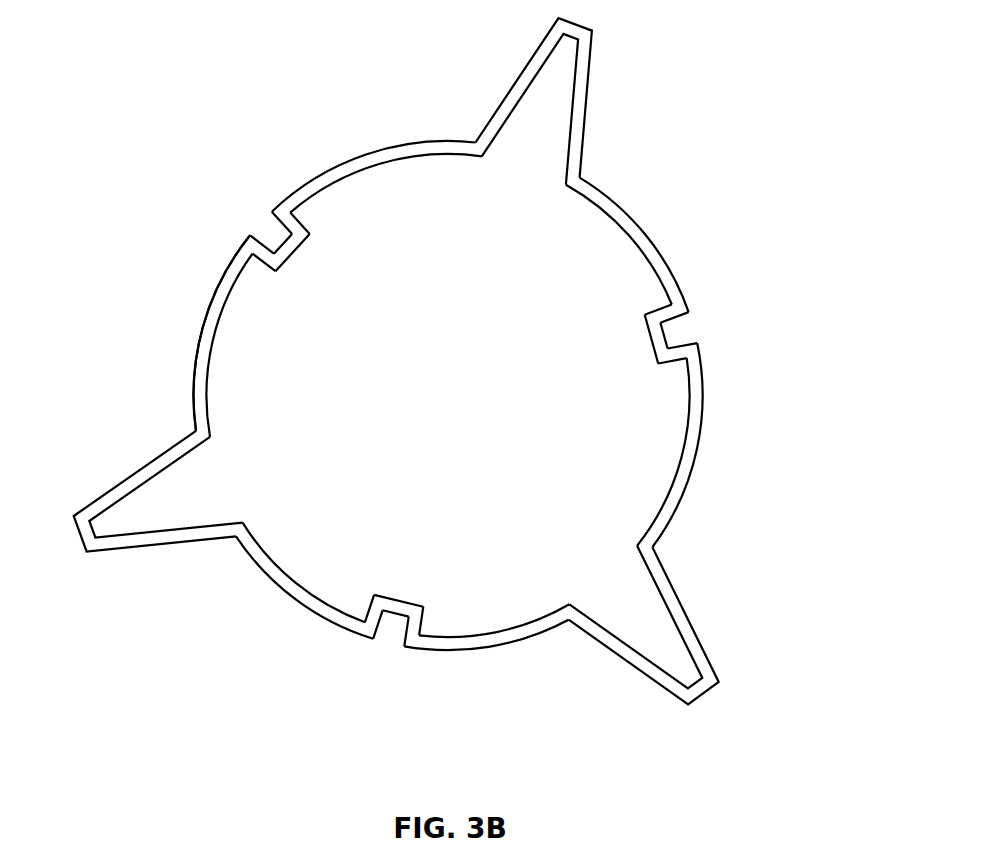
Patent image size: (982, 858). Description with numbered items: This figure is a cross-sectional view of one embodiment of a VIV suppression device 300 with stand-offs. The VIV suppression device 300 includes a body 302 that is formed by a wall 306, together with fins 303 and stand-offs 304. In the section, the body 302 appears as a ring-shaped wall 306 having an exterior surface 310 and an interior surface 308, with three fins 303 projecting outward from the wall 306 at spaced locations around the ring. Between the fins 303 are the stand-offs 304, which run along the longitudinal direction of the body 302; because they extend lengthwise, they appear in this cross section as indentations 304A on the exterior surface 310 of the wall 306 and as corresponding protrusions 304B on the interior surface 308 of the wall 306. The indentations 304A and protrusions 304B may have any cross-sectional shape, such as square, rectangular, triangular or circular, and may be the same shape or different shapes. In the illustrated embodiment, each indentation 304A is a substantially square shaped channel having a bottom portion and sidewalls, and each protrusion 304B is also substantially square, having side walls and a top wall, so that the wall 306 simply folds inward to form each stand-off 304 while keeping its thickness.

The VIV suppression device 300 is at (668, 184).
The body 302 is at (327, 167).
The fins 303 is at (510, 87).
The stand-offs 304 is at (247, 223).
The indentations 304A is at (278, 238).
The protrusions 304B is at (290, 253).
The wall 306 is at (213, 305).
The interior surface 308 is at (212, 393).
The exterior surface 310 is at (194, 385).